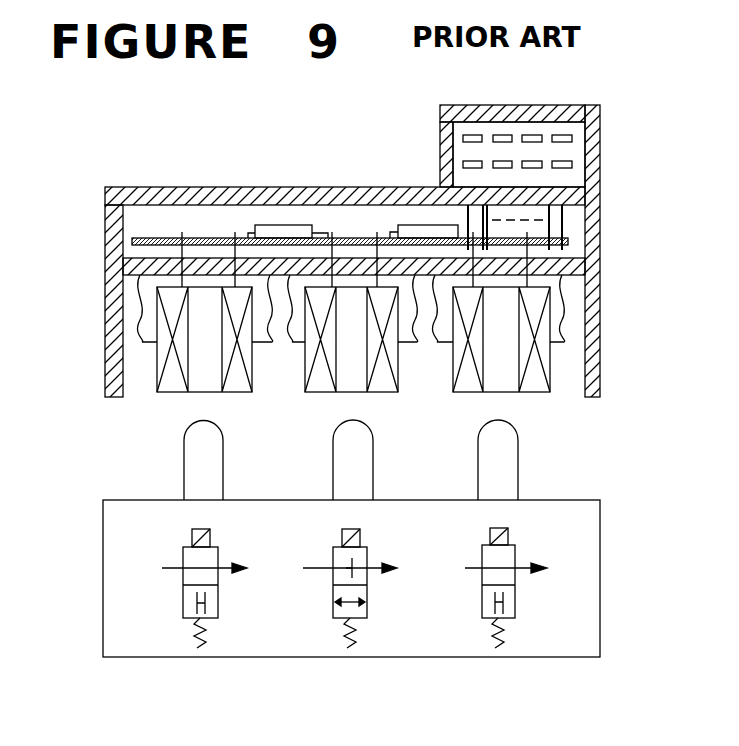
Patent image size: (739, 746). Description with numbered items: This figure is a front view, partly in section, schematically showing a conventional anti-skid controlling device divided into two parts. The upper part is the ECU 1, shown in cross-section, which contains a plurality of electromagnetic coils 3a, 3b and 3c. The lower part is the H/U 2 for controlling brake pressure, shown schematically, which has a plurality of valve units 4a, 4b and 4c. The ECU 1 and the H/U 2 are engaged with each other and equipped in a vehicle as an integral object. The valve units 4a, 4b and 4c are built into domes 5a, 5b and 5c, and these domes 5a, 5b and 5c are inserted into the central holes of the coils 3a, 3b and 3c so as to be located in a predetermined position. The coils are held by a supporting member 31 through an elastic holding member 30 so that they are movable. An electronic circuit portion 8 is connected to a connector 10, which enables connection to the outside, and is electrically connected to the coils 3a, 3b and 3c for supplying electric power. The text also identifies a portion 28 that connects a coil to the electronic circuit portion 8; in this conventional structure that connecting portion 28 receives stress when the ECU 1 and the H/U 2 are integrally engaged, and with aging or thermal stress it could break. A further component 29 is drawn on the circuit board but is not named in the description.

The ECU 1 is at (600, 365).
The H/U 2 is at (600, 570).
The electromagnetic coil 3a is at (168, 397).
The electromagnetic coil 3b is at (337, 397).
The electromagnetic coil 3c is at (468, 397).
The valve unit 4a is at (187, 615).
The valve unit 4b is at (337, 615).
The valve unit 4c is at (480, 610).
The dome 5a is at (203, 475).
The dome 5b is at (352, 475).
The dome 5c is at (497, 475).
The electronic circuit portion 8 is at (207, 238).
The connector 10 is at (565, 167).
The connecting portion 28 is at (233, 236).
The electronic component 29 is at (340, 220).
The elastic holding member 30 is at (140, 322).
The supporting member 31 is at (578, 246).